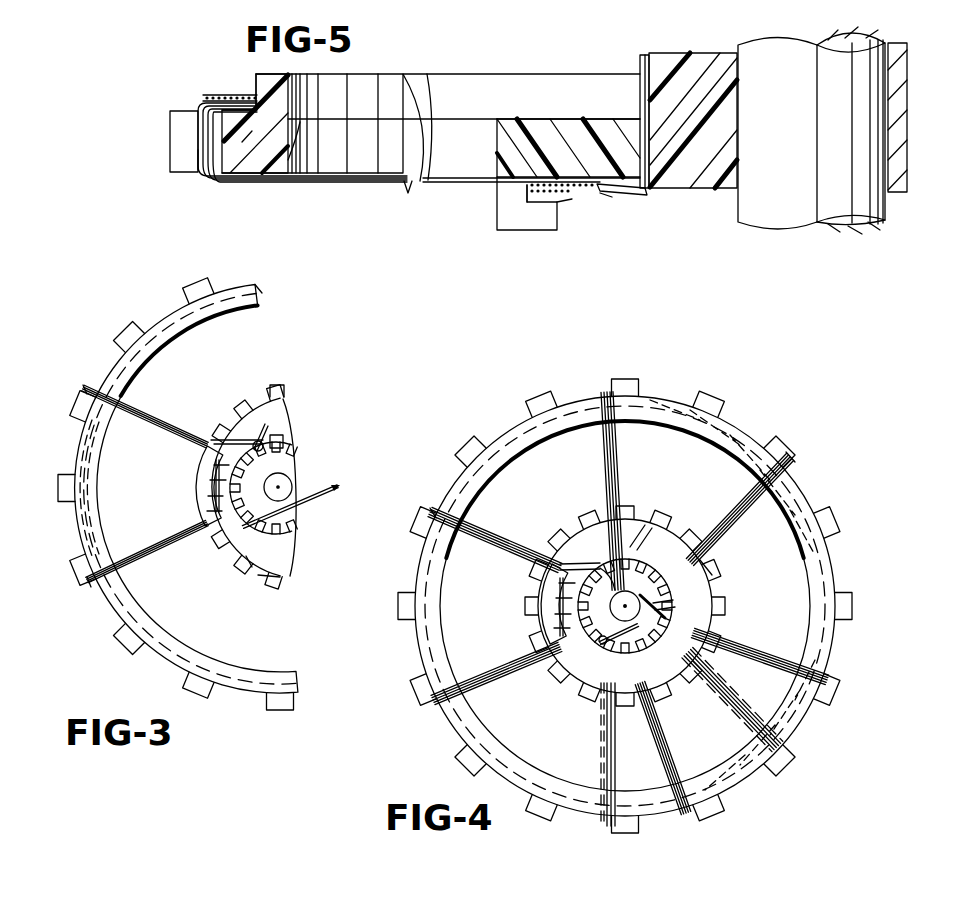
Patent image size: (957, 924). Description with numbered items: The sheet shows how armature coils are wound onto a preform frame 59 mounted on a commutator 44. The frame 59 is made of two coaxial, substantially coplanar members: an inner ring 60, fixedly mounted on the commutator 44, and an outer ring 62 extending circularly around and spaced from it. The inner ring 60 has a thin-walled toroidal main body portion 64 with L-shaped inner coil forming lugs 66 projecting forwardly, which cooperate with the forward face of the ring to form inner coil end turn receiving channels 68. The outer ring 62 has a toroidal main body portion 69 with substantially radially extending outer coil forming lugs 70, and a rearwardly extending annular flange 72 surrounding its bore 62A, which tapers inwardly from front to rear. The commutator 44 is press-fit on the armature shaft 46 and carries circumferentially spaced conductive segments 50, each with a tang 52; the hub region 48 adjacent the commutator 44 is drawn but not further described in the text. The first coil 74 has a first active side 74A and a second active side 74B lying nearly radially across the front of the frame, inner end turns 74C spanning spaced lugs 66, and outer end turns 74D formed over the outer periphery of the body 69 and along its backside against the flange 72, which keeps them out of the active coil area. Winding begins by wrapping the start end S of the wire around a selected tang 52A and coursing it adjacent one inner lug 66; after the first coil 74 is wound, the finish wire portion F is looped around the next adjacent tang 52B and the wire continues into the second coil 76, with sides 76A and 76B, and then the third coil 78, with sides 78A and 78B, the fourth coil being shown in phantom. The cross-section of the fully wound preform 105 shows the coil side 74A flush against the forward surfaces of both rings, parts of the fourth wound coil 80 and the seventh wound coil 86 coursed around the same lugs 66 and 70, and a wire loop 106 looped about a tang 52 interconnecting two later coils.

In FIG. 5, the commutator 44 is at (640, 63).
In FIG. 3, the commutator 44 is at (286, 539).
In FIG. 4, the commutator 44 is at (573, 602).
In FIG. 5, the armature shaft 46 is at (790, 108).
In FIG. 5, the hub member 48 is at (684, 60).
In FIG. 3, the hub member 48 is at (291, 518).
In FIG. 4, the hub member 48 is at (657, 563).
In FIG. 5, the conductive segments 50 is at (640, 98).
In FIG. 5, the commutator tangs 52 is at (612, 196).
In FIG. 3, the commutator tangs 52 is at (284, 441).
In FIG. 4, the commutator tangs 52 is at (640, 533).
In FIG. 3, the selected tang 52A is at (265, 452).
In FIG. 4, the selected tang 52A is at (597, 645).
In FIG. 3, the commutator tang 52B is at (247, 558).
In FIG. 4, the commutator tang 52B is at (700, 608).
In FIG. 3, the preform frame 59 is at (262, 294).
In FIG. 4, the preform frame 59 is at (665, 391).
In FIG. 5, the inner ring 60 is at (537, 119).
In FIG. 3, the inner ring 60 is at (273, 397).
In FIG. 4, the inner ring 60 is at (716, 591).
In FIG. 5, the outer ring 62 is at (421, 75).
In FIG. 3, the outer ring 62 is at (163, 307).
In FIG. 4, the outer ring 62 is at (505, 432).
In FIG. 5, the bore 62A is at (288, 160).
In FIG. 5, the main body portion 64 is at (512, 126).
In FIG. 3, the main body portion 64 is at (262, 576).
In FIG. 4, the main body portion 64 is at (583, 535).
In FIG. 5, the inner coil forming lugs 66 is at (555, 230).
In FIG. 3, the inner coil forming lugs 66 is at (228, 424).
In FIG. 4, the inner coil forming lugs 66 is at (702, 568).
In FIG. 5, the inner coil end turn receiving channels 68 is at (558, 202).
In FIG. 5, the main body portion 69 is at (243, 143).
In FIG. 5, the outer coil forming lugs 70 is at (170, 140).
In FIG. 3, the outer coil forming lugs 70 is at (199, 272).
In FIG. 4, the outer coil forming lugs 70 is at (538, 398).
In FIG. 5, the annular flange 72 is at (256, 74).
In FIG. 3, the annular flange 72 is at (160, 668).
In FIG. 4, the annular flange 72 is at (445, 715).
In FIG. 5, the first coil 74 is at (358, 184).
In FIG. 3, the first coil 74 is at (183, 421).
In FIG. 4, the first coil 74 is at (666, 745).
In FIG. 5, the first active side 74A is at (408, 193).
In FIG. 3, the first active side 74A is at (170, 437).
In FIG. 3, the second active side 74B is at (172, 552).
In FIG. 4, the second active side 74B is at (776, 637).
In FIG. 5, the inner end turns 74C is at (526, 198).
In FIG. 3, the inner end turns 74C is at (212, 496).
In FIG. 5, the outer end turns 74D is at (198, 108).
In FIG. 3, the outer end turns 74D is at (85, 438).
In FIG. 4, the second coil 76 is at (795, 456).
In FIG. 4, the coil side 76A is at (795, 477).
In FIG. 4, the coil side 76B is at (606, 390).
In FIG. 4, the third coil 78 is at (434, 511).
In FIG. 4, the coil side 78A is at (505, 540).
In FIG. 4, the coil side 78B is at (490, 670).
In FIG. 5, the fourth wound coil 80 is at (203, 96).
In FIG. 4, the fourth wound coil 80 is at (603, 729).
In FIG. 5, the seventh wound coil 86 is at (226, 96).
In FIG. 5, the fully wound preform 105 is at (240, 190).
In FIG. 5, the wire loop 106 is at (607, 197).
In FIG. 3, the start end S is at (252, 440).
In FIG. 3, the finish wire portion F is at (340, 486).